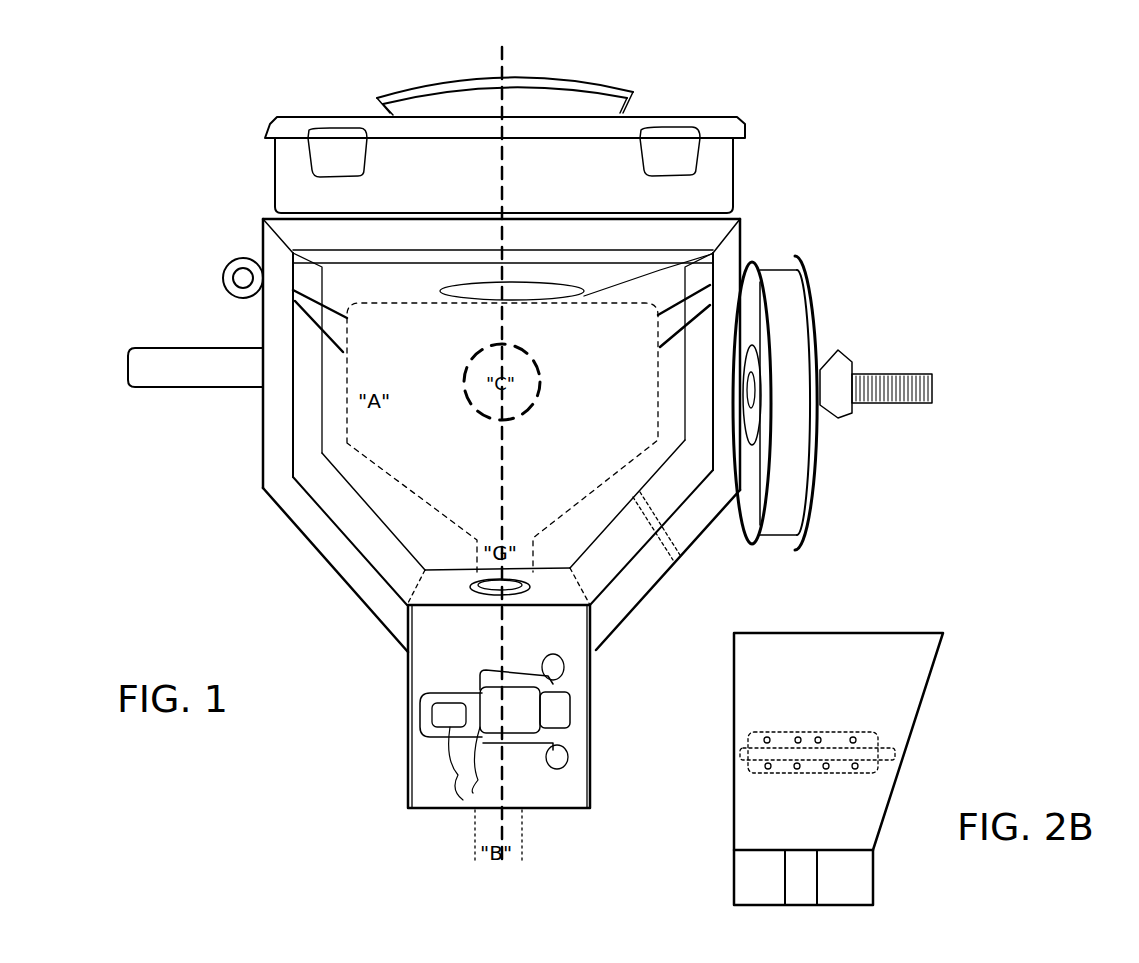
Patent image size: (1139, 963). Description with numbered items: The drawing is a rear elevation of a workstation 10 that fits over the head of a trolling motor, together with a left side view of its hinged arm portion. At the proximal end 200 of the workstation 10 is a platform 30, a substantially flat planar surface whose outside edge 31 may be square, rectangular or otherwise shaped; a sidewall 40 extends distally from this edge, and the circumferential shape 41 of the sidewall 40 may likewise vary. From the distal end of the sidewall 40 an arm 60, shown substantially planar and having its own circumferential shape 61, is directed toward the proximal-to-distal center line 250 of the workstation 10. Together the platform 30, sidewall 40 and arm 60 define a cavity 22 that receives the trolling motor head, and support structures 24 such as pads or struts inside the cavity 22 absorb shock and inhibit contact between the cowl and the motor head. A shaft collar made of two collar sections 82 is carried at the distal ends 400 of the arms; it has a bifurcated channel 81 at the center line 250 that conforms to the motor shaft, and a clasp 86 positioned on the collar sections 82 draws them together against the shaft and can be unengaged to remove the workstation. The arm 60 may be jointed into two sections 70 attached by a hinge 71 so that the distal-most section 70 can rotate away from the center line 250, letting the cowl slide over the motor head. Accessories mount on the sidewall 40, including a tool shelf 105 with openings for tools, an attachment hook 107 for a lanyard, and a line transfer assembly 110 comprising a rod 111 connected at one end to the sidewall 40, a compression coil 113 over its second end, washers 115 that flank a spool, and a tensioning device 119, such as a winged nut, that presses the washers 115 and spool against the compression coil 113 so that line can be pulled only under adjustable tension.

In FIG. 1, the workstation 10 is at (777, 95).
In FIG. 1, the proximal end 200 is at (208, 137).
In FIG. 1, the proximal-to-distal center line 250 is at (515, 55).
In FIG. 1, the outside edge 31 is at (268, 220).
In FIG. 1, the platform 30 is at (707, 227).
In FIG. 1, the attachment hook 107 is at (228, 262).
In FIG. 1, the tool shelf 105 is at (147, 362).
In FIG. 1, the support structures 24 is at (313, 325).
In FIG. 1, the sidewall 40 is at (263, 458).
In FIG. 1, the circumferential shape of the sidewall 41 is at (277, 427).
In FIG. 1, the cavity 22 is at (447, 557).
In FIG. 1, the bifurcated channel 81 is at (490, 583).
In FIG. 2B, the bifurcated channel 81 is at (795, 870).
In FIG. 1, the distal ends 400 is at (367, 788).
In FIG. 1, the clasp 86 is at (507, 717).
In FIG. 1, the arm 60 is at (627, 582).
In FIG. 2B, the arm 60 is at (913, 725).
In FIG. 1, the circumferential shape of the arm 61 is at (613, 621).
In FIG. 1, the jointed sections 70 is at (612, 570).
In FIG. 2B, the jointed sections 70 is at (780, 697).
In FIG. 1, the line transfer assembly 110 is at (930, 317).
In FIG. 1, the compression coil 113 is at (770, 245).
In FIG. 1, the washers 115 is at (752, 425).
In FIG. 1, the tensioning device 119 is at (840, 357).
In FIG. 1, the rod 111 is at (910, 380).
In FIG. 2B, the hinge 71 is at (827, 738).
In FIG. 2B, the collar sections 82 is at (752, 885).